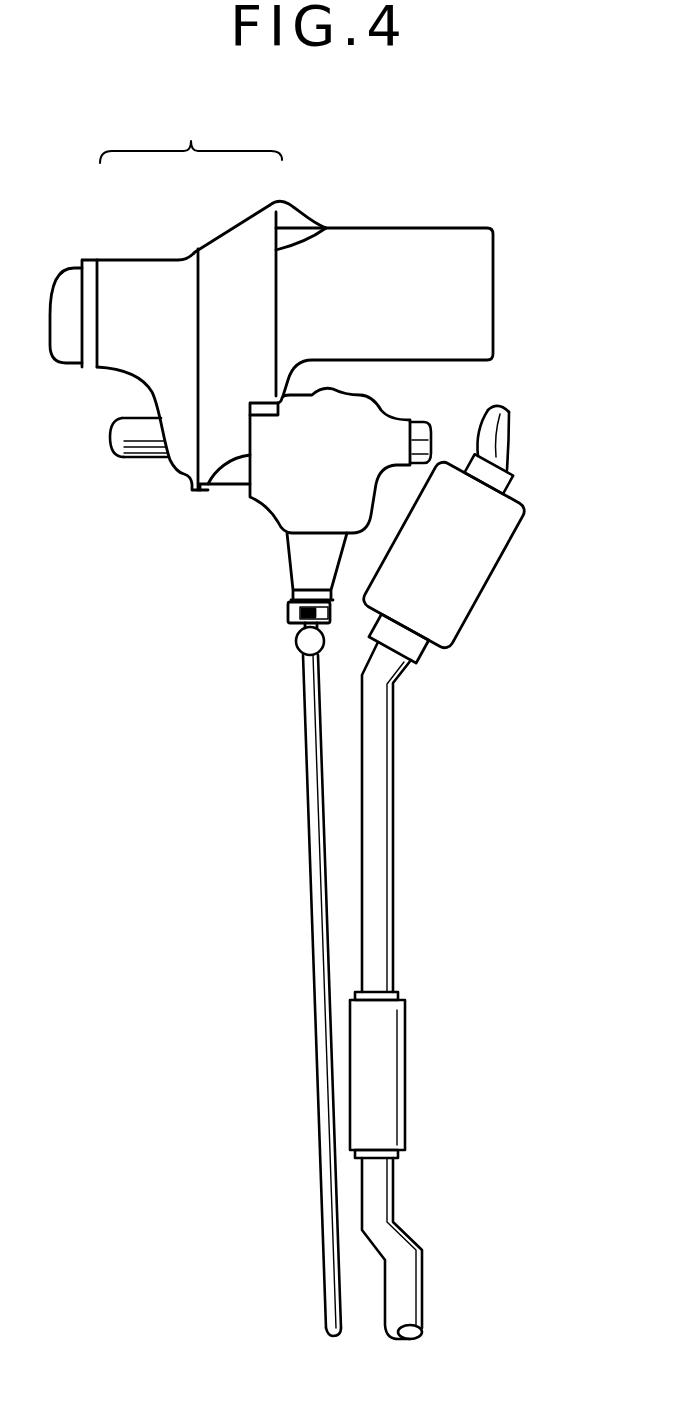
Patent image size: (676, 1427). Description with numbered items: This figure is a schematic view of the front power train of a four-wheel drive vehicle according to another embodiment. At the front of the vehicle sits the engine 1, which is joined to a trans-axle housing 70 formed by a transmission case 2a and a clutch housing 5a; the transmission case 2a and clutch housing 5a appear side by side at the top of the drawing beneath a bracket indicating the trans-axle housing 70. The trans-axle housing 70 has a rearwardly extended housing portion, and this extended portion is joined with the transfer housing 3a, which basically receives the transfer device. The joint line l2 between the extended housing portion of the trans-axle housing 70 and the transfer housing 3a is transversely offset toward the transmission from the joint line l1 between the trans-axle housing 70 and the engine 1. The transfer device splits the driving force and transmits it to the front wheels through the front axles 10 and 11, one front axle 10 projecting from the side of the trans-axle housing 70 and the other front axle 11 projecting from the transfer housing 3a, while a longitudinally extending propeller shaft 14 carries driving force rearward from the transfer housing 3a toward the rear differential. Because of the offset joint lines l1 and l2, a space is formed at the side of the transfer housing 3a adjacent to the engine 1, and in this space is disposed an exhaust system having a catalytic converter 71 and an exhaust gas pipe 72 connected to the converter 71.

The engine 1 is at (472, 228).
The transmission case 2a is at (133, 268).
The clutch housing 5a is at (264, 216).
The trans-axle housing 70 is at (191, 135).
The joint line l1 is at (323, 228).
The joint line l2 is at (208, 493).
The front axle 10 is at (140, 440).
The transfer housing 3a is at (287, 492).
The front axle 11 is at (420, 426).
The exhaust gas pipe 72 is at (513, 435).
The catalytic converter 71 is at (478, 588).
The propeller shaft 14 is at (312, 862).